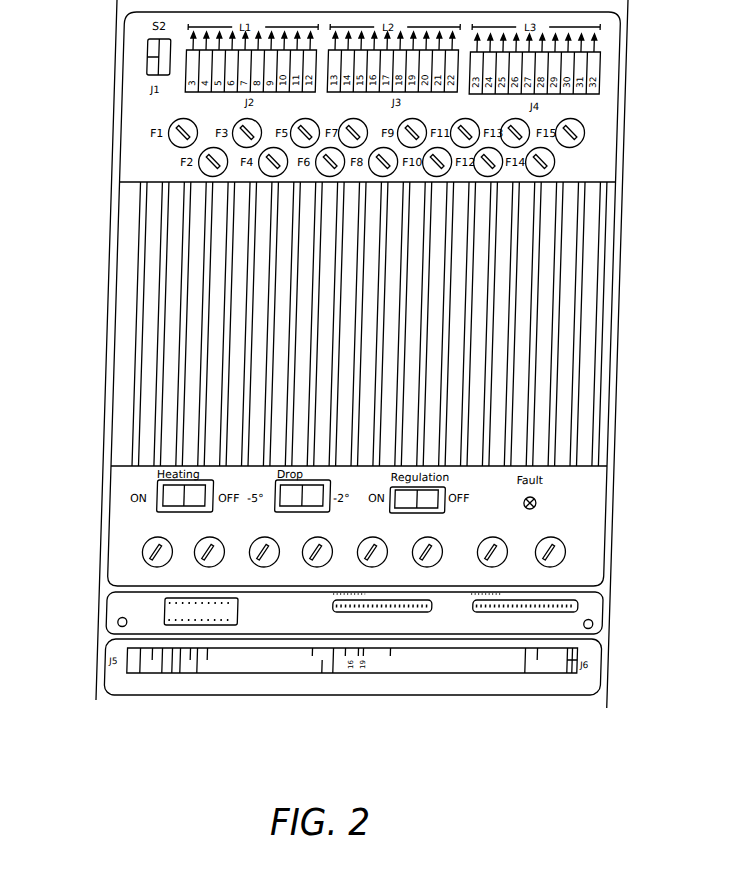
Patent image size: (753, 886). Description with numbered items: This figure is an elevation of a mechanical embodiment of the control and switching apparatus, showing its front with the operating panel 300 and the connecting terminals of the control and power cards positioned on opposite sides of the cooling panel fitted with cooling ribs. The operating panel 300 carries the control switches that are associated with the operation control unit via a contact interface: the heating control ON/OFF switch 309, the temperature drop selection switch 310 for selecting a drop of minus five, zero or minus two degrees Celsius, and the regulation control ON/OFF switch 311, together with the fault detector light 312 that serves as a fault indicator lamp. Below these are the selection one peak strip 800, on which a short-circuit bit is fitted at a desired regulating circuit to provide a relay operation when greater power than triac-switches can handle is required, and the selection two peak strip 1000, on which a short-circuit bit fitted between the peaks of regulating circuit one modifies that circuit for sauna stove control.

The operating panel 300 is at (622, 549).
The heating control ON/OFF switch 309 is at (172, 510).
The temperature drop selection switch 310 is at (342, 513).
The regulation control ON/OFF switch 311 is at (458, 514).
The fault detector light 312 is at (549, 509).
The selection 1 peak strip 800 is at (442, 617).
The selection 2 peak strip 1000 is at (599, 616).